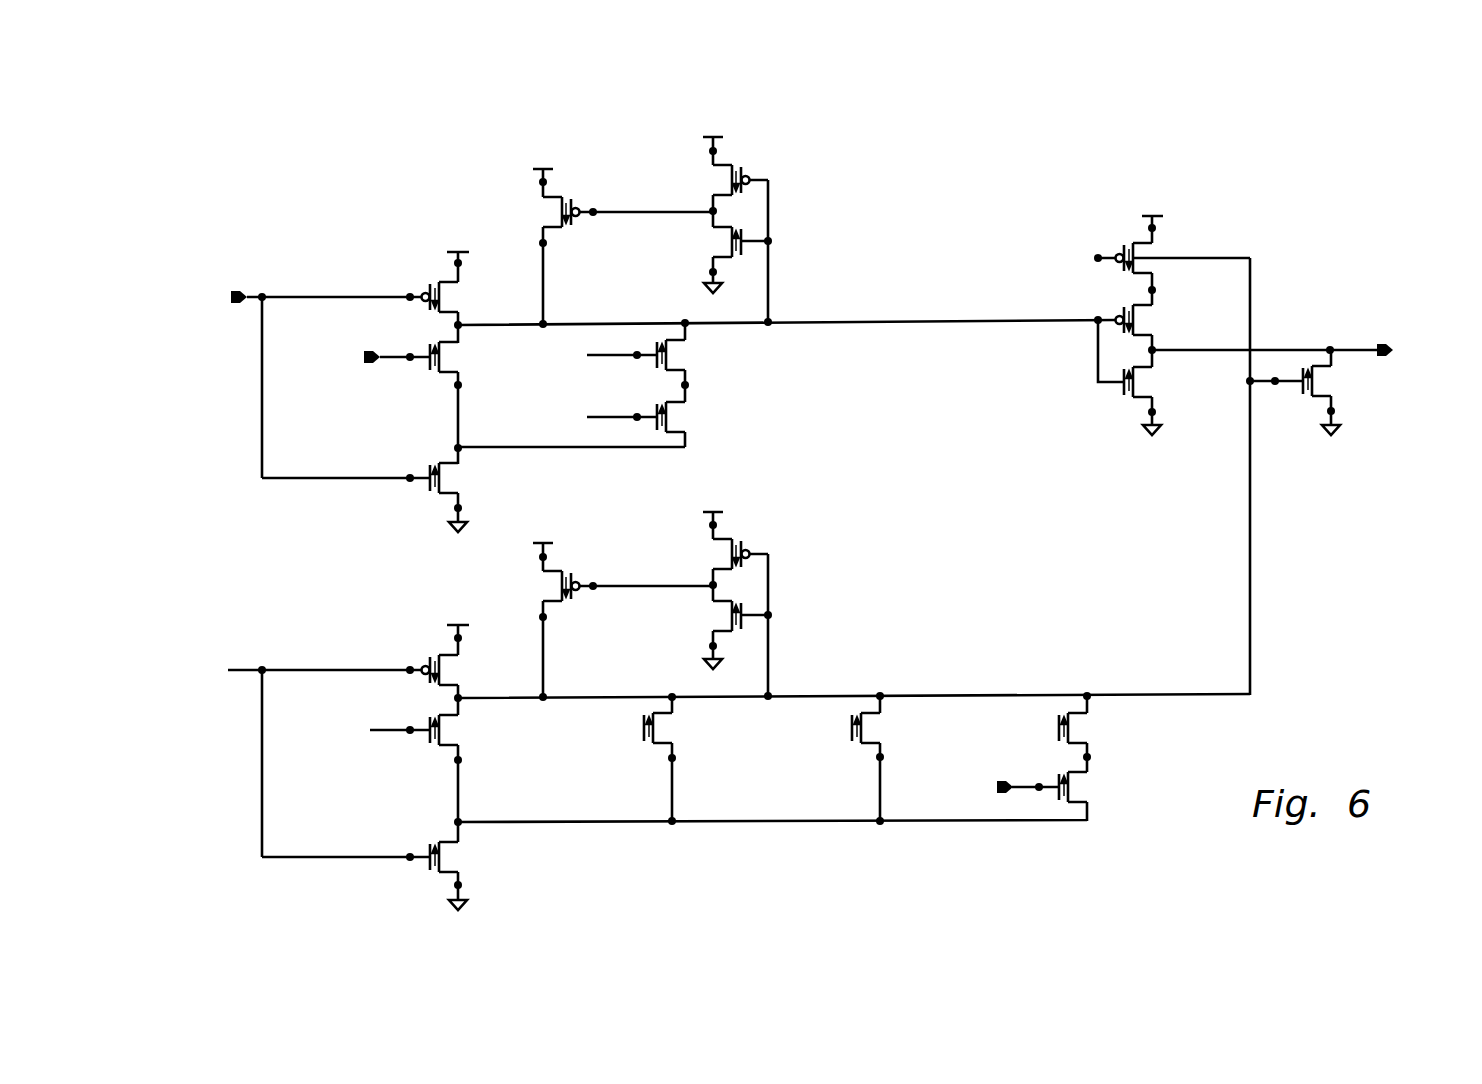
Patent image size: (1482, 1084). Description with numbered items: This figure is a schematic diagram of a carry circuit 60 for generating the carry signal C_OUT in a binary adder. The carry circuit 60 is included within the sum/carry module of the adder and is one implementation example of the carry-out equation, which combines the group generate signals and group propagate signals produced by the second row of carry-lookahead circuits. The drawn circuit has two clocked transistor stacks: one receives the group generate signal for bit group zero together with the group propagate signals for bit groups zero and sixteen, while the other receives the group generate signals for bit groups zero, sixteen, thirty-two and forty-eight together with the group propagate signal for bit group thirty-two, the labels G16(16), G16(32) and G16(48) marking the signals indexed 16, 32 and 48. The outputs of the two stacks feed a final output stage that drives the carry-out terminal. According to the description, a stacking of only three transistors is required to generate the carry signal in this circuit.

The carry circuit 60 is at (1334, 194).
The G16(16) input transistor 16 is at (644, 728).
The G16(32) input transistor 32 is at (852, 728).
The G16(48) input transistor 48 is at (1059, 728).